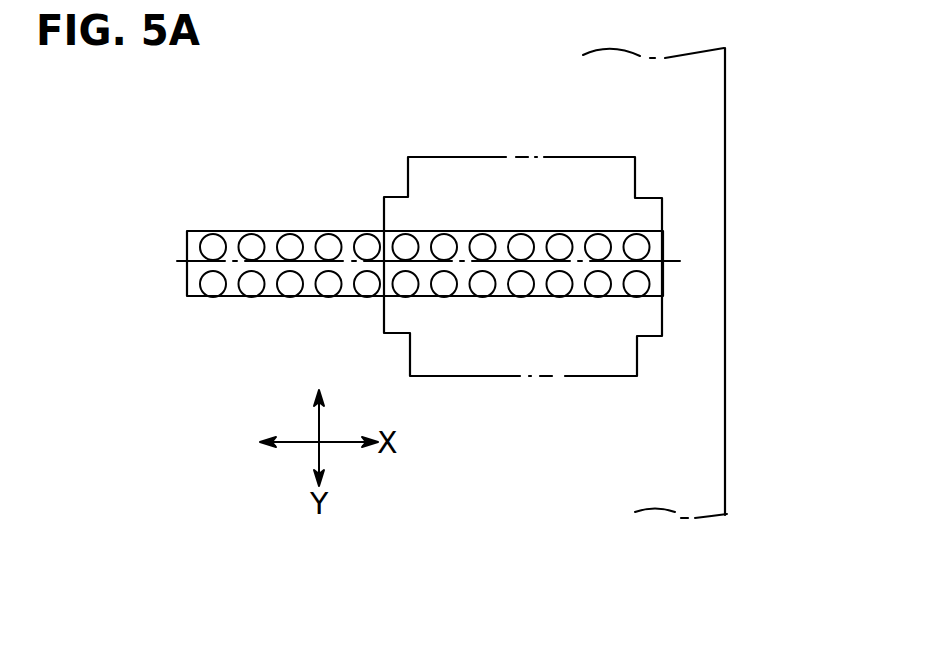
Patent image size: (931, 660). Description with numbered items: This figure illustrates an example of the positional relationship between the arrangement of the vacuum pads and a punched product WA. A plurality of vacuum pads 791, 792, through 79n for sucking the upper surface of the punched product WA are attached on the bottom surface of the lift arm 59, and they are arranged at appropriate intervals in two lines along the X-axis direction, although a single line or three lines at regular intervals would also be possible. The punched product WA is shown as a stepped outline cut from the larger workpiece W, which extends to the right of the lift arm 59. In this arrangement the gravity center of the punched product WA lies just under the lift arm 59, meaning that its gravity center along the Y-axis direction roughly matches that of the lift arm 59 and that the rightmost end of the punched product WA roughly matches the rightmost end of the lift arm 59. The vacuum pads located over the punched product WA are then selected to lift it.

The workpiece W is at (726, 352).
The punched product WA is at (489, 157).
The lift arm 59 is at (310, 296).
The vacuum pad 79n is at (210, 231).
The vacuum pad 792 is at (592, 296).
The vacuum pad 791 is at (637, 296).